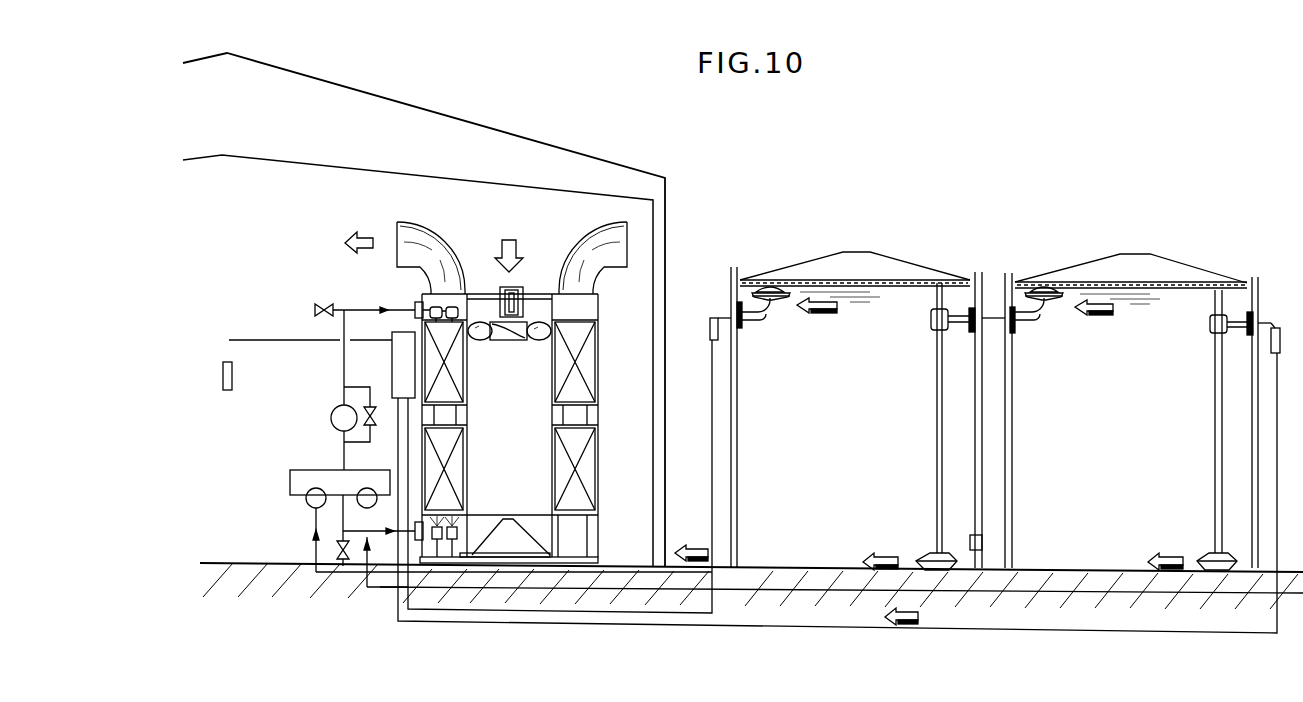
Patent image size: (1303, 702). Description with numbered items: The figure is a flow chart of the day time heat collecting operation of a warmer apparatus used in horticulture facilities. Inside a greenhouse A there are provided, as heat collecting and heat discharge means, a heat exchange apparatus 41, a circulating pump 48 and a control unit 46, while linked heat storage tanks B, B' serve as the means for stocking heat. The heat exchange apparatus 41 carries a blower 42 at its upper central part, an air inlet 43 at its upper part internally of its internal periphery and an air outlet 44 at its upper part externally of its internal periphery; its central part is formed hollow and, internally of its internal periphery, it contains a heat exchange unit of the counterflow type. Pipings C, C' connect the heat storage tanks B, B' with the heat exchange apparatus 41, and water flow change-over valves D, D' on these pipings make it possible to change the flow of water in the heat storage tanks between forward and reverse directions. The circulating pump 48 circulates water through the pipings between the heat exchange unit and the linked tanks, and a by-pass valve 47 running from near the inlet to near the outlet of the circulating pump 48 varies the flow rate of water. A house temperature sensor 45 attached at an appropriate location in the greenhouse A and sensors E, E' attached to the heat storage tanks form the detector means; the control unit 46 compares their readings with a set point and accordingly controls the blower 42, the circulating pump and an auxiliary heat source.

The heat exchange apparatus 41 is at (536, 292).
The blower 42 is at (505, 337).
The air inlet 43 is at (472, 294).
The air outlet 44 is at (620, 241).
The house temperature sensor 45 is at (232, 373).
The control unit 46 is at (393, 332).
The by-pass valve 47 is at (369, 407).
The circulating pump 48 is at (332, 427).
The greenhouse A is at (320, 81).
The heat storage tank B is at (868, 398).
The heat storage tank B' is at (1131, 400).
The piping C is at (560, 493).
The piping C' is at (837, 500).
The water flow change-over valve D is at (497, 530).
The water flow change-over valve D' is at (378, 537).
The sensor E is at (712, 310).
The sensor E' is at (1277, 324).